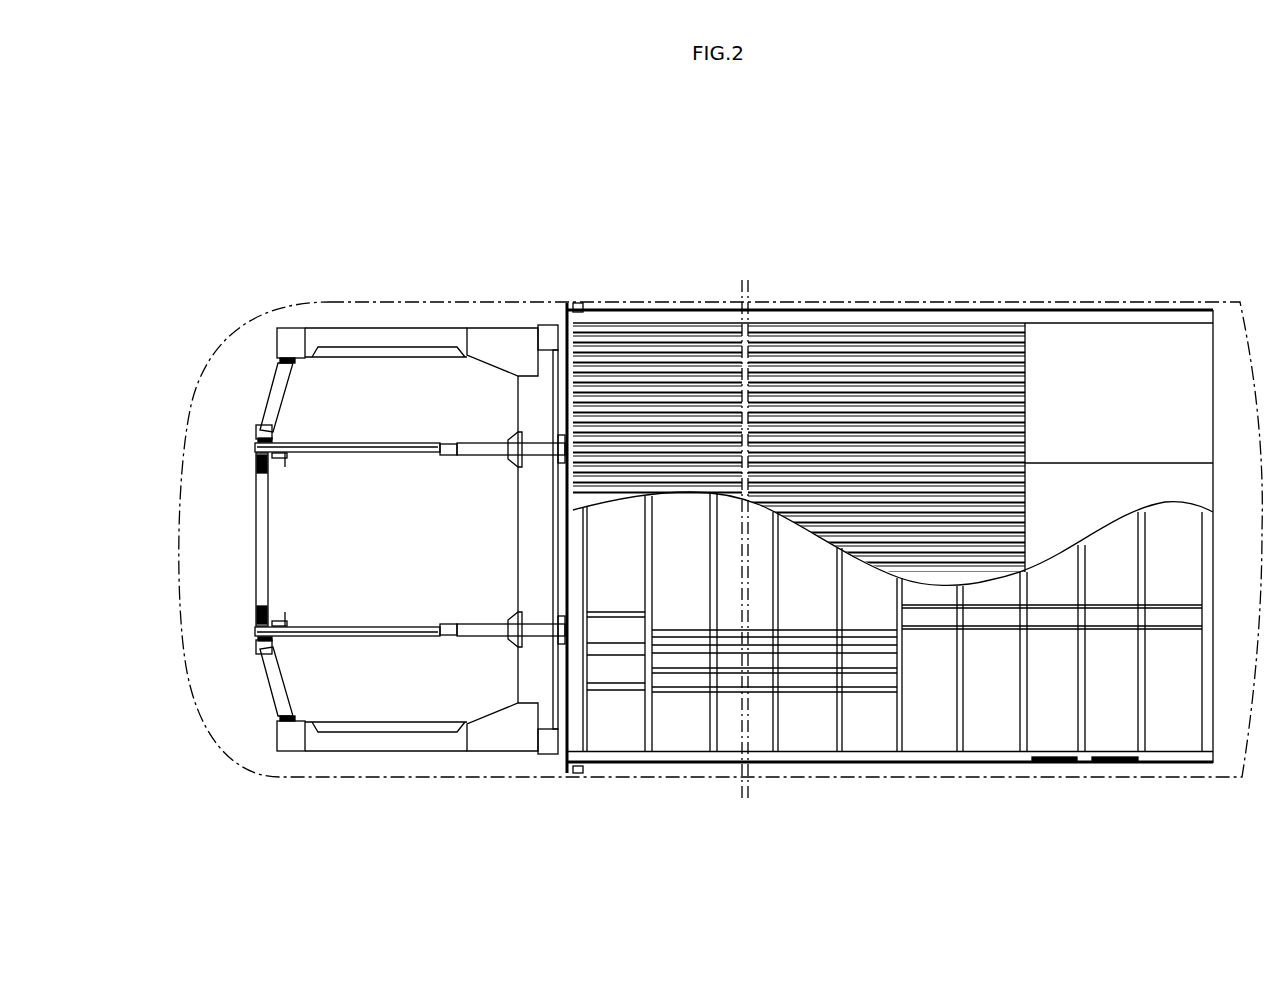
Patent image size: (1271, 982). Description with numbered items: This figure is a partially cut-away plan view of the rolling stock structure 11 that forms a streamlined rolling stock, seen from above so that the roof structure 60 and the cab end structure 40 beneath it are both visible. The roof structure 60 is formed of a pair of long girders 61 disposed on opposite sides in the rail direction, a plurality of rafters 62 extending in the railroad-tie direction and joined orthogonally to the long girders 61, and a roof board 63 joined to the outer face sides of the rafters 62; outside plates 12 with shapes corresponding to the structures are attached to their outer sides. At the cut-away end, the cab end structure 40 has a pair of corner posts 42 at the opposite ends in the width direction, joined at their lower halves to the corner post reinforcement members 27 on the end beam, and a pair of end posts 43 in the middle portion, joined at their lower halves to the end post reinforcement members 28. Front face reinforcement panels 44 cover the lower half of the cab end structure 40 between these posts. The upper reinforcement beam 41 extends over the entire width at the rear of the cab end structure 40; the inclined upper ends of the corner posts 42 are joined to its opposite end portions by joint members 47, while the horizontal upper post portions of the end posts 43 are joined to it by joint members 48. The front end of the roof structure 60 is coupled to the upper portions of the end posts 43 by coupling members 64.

The rolling stock structure 11 is at (703, 210).
The outside plates 12 is at (932, 302).
The corner post reinforcement members 27 is at (293, 364).
The end post reinforcement members 28 is at (280, 458).
The cab end structure 40 is at (352, 318).
The upper reinforcement beam 41 is at (522, 546).
The corner posts 42 is at (418, 328).
The end posts 43 is at (361, 446).
The front face reinforcement panels 44 is at (255, 533).
The joint members 47 is at (492, 354).
The joint members 48 is at (512, 462).
The roof structure 60 is at (1058, 306).
The long girders 61 is at (1057, 630).
The rafters 62 is at (710, 573).
The roof board 63 is at (817, 536).
The coupling members 64 is at (477, 454).